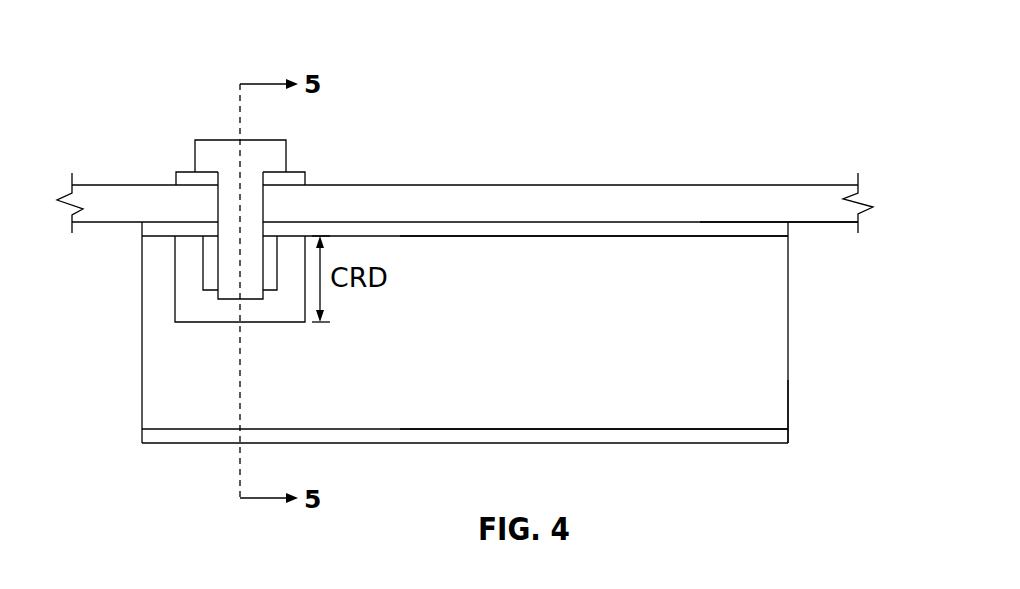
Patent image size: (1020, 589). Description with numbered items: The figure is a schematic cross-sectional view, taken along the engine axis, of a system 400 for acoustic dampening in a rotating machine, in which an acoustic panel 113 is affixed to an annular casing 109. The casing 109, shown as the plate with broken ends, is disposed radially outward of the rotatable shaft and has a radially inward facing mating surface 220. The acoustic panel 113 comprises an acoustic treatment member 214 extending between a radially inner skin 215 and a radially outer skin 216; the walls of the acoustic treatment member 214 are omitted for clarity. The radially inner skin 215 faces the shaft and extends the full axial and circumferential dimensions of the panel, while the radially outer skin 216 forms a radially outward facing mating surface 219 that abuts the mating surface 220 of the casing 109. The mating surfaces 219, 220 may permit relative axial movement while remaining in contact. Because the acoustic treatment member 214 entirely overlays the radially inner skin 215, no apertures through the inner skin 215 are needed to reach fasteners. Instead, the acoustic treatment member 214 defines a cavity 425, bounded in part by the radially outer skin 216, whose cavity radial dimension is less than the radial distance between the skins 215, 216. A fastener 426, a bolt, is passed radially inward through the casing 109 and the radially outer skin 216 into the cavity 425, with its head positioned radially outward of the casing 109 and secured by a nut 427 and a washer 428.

The system for acoustic dampening 400 is at (143, 37).
The annular casing 109 is at (823, 183).
The mating surface of the casing 220 is at (836, 224).
The mating surface of the radially outer skin 219 is at (750, 220).
The acoustic treatment member 214 is at (770, 405).
The radially outer skin 216 is at (643, 230).
The radially inner skin 215 is at (625, 443).
The acoustic panel 113 is at (806, 471).
The cavity 425 is at (185, 304).
The fastener 426 is at (218, 157).
The nut 427 is at (212, 258).
The washer 428 is at (297, 178).